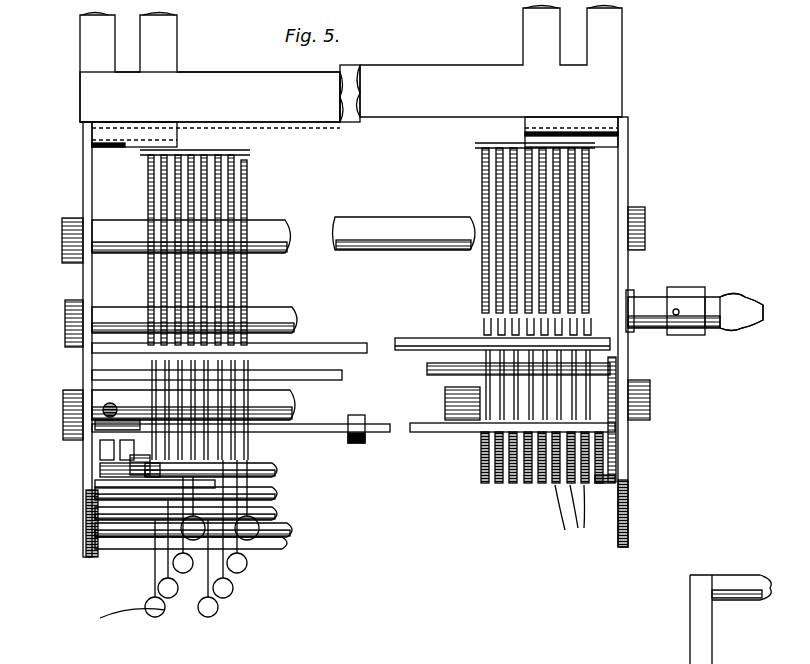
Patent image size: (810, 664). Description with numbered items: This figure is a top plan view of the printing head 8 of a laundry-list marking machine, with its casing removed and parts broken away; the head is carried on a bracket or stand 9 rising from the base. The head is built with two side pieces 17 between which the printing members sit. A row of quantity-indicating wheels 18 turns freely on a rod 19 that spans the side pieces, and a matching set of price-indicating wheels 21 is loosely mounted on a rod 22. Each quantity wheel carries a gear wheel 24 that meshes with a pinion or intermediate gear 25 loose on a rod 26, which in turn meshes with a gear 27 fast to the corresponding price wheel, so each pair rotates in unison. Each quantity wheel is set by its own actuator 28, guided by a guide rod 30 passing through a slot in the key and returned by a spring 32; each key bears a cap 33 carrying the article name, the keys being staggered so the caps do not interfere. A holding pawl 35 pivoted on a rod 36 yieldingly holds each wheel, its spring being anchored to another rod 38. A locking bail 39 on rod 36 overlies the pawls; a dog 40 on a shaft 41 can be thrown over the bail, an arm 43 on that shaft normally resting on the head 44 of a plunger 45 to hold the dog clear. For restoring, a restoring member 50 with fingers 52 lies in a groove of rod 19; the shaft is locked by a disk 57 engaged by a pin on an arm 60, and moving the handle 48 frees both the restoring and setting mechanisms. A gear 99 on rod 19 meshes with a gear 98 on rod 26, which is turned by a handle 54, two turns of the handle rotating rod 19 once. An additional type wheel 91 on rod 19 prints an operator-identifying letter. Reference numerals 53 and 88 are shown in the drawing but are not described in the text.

The printing head 8 is at (364, 118).
The bracket or stand 9 is at (395, 72).
The side pieces 17 is at (83, 273).
The quantity-indicating wheels 18 is at (515, 485).
The rod 19 is at (445, 392).
The price-indicating wheels 21 is at (404, 239).
The rod 22 is at (295, 230).
The gear wheel 24 is at (280, 467).
The pinion or intermediate gear 25 is at (255, 308).
The rod 26 is at (298, 322).
The gear 27 is at (640, 158).
The actuator 28 is at (224, 556).
The guide rod 30 is at (298, 540).
The spring 32 is at (280, 492).
The cap 33 is at (220, 612).
The holding pawl 35 is at (165, 385).
The rod 36 is at (427, 368).
The rod 38 is at (395, 344).
The locking bail 39 is at (445, 432).
The dog 40 is at (368, 440).
The shaft 41 is at (366, 438).
The arm 43 is at (100, 452).
The head 44 is at (100, 399).
The plunger 45 is at (95, 437).
The handle 48 is at (122, 458).
The restoring member 50 is at (460, 430).
The fingers 52 is at (472, 390).
The link 53 is at (150, 575).
The handle 54 is at (712, 297).
The disk 57 is at (165, 480).
The arm 60 is at (145, 472).
The roller 88 is at (100, 418).
The operator-identifying type wheel 91 is at (220, 490).
The gear 98 is at (625, 290).
The gear 99 is at (628, 483).